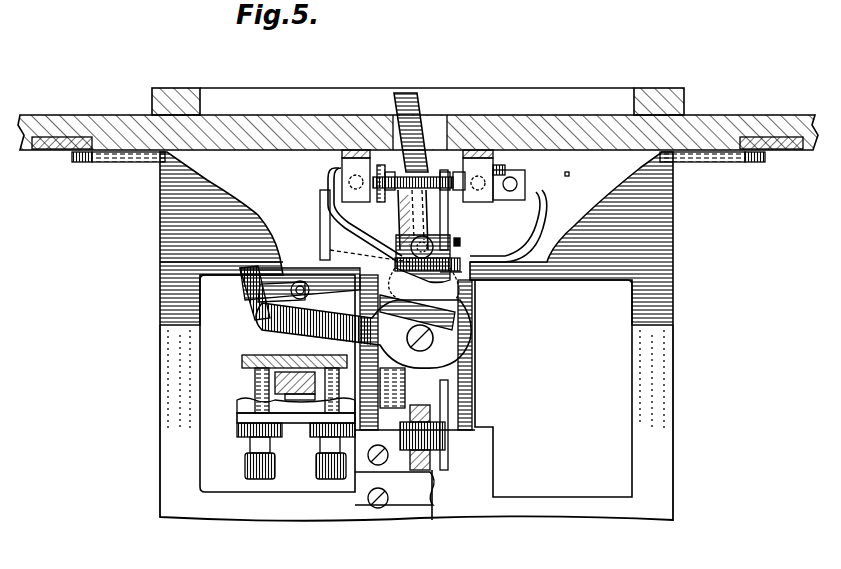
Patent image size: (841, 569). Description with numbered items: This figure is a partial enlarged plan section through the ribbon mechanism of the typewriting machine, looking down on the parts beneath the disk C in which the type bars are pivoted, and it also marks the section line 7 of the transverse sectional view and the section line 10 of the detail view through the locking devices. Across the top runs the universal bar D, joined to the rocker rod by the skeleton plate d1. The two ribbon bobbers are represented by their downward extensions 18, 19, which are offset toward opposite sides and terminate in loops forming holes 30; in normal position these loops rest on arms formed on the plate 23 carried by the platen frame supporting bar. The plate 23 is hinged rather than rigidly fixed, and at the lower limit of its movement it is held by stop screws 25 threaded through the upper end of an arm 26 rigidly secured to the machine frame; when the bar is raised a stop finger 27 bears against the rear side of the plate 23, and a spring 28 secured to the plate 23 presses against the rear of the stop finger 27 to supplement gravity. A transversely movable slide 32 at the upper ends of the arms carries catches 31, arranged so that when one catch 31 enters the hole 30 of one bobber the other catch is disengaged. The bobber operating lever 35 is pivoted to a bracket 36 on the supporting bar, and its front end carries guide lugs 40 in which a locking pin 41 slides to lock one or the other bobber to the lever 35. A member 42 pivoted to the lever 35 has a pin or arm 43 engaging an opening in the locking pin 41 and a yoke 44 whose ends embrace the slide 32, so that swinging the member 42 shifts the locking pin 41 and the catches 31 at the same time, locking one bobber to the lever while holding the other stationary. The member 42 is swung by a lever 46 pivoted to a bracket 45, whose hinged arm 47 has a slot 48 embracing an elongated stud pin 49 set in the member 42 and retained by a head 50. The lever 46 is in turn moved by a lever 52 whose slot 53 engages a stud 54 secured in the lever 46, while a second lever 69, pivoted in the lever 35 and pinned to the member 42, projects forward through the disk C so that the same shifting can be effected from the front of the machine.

The universal bar D is at (38, 152).
The disk C is at (336, 102).
The skeleton plate d1 is at (676, 372).
The section line 10— 10 is at (412, 55).
The section line 7— 7 is at (313, 180).
The downward extension of ribbon bobber 18 is at (356, 150).
The downward extension of ribbon bobber 19 is at (488, 172).
The plate 23 is at (244, 368).
The stop screws 25 is at (250, 452).
The arm 26 is at (255, 418).
The stop finger 27 is at (255, 381).
The spring 28 is at (277, 399).
The holes or loops 30 is at (342, 166).
The catches 31 is at (525, 188).
The slide 32 is at (330, 178).
The bobber operating lever 35 is at (430, 385).
The bracket 36 is at (432, 520).
The guide lugs 40 is at (390, 170).
The locking pin 41 is at (455, 176).
The member 42 is at (478, 264).
The pin or arm 43 is at (445, 176).
The yoke 44 is at (543, 226).
The bracket 45 is at (435, 375).
The lever 46 is at (363, 318).
The arm 47 is at (448, 224).
The slot 48 is at (403, 236).
The stud pin 49 is at (367, 215).
The head 50 is at (455, 272).
The lever 52 is at (250, 298).
The slot 53 is at (275, 294).
The stud 54 is at (200, 266).
The lever 69 is at (420, 96).